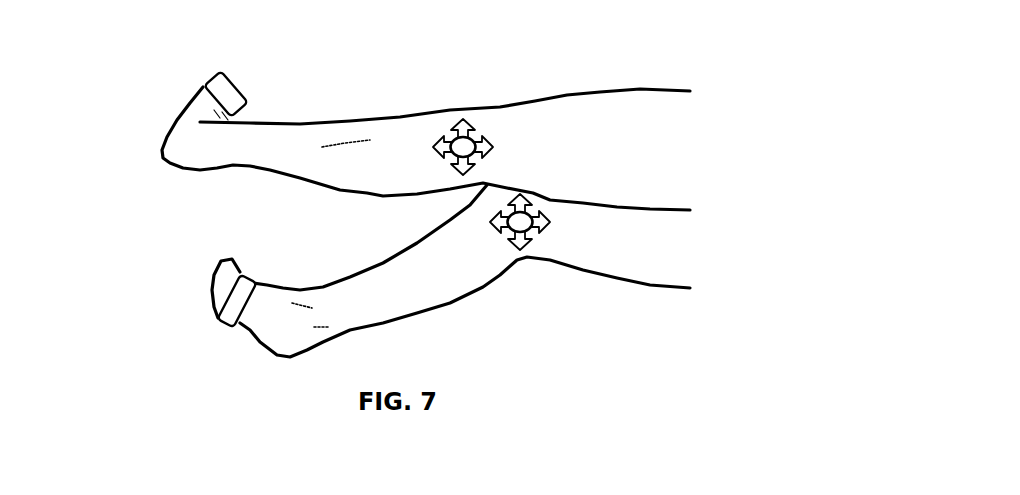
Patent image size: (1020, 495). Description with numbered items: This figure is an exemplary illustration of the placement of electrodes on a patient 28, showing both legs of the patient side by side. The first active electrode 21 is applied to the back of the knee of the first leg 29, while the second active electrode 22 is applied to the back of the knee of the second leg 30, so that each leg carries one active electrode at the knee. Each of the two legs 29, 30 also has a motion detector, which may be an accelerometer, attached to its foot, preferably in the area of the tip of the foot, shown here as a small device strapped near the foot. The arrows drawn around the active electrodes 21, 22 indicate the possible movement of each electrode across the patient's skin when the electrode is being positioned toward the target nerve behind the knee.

The first active electrode 21 is at (477, 135).
The second active electrode 22 is at (536, 243).
The patient 28 is at (733, 118).
The first leg 29 is at (577, 85).
The second leg 30 is at (612, 288).